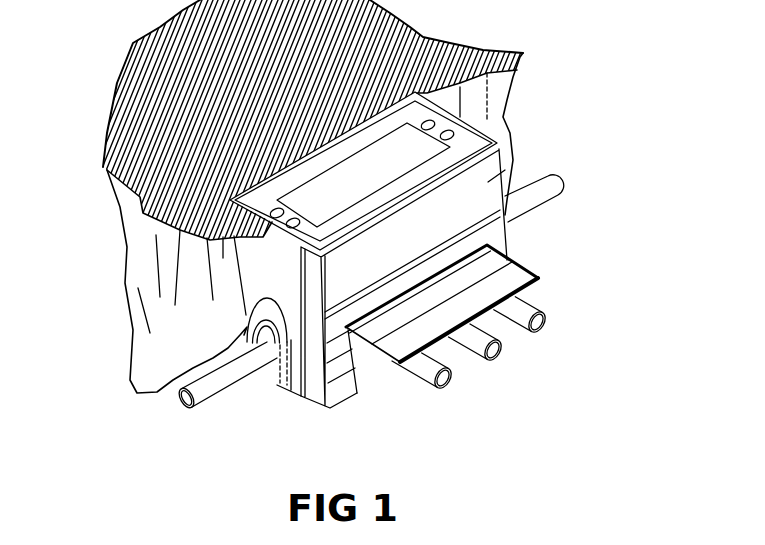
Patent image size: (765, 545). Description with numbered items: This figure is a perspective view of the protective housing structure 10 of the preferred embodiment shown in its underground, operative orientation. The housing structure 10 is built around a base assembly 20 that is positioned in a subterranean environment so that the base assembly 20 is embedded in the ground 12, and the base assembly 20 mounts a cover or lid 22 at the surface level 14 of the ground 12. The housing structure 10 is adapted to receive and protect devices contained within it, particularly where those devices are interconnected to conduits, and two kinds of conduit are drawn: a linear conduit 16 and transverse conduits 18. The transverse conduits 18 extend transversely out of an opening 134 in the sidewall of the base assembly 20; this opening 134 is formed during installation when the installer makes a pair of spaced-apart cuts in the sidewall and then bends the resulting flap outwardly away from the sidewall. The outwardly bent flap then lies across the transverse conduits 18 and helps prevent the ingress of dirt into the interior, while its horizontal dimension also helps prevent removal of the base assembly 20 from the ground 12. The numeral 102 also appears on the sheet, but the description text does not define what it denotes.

The housing structure 10 is at (432, 273).
The ground 12 is at (510, 110).
The surface level 14 is at (523, 55).
The linear conduit 16 is at (542, 190).
The transverse conduits 18 is at (445, 392).
The base assembly 20 is at (490, 180).
The cover or lid 22 is at (363, 175).
The opening 134 is at (372, 382).
The component of following figure (partially shown) 102 is at (455, 544).